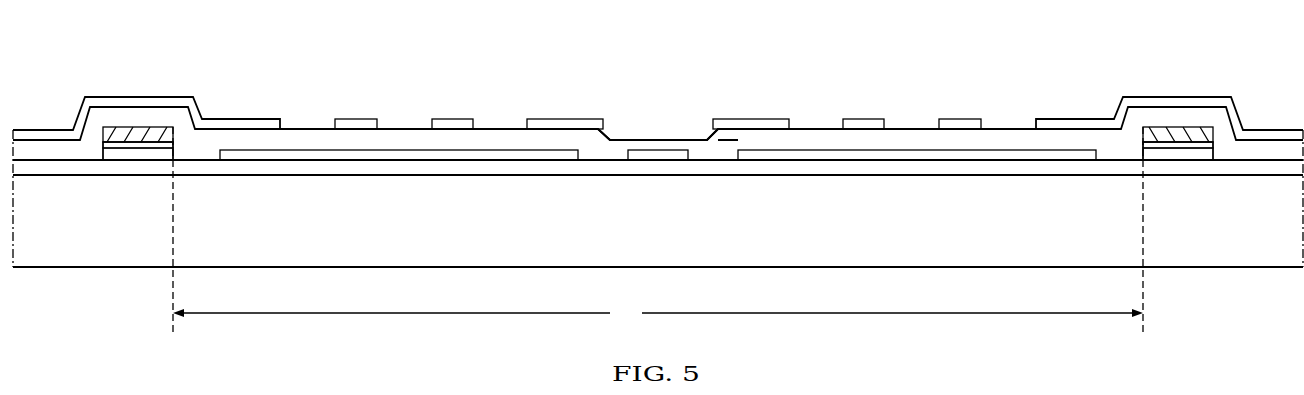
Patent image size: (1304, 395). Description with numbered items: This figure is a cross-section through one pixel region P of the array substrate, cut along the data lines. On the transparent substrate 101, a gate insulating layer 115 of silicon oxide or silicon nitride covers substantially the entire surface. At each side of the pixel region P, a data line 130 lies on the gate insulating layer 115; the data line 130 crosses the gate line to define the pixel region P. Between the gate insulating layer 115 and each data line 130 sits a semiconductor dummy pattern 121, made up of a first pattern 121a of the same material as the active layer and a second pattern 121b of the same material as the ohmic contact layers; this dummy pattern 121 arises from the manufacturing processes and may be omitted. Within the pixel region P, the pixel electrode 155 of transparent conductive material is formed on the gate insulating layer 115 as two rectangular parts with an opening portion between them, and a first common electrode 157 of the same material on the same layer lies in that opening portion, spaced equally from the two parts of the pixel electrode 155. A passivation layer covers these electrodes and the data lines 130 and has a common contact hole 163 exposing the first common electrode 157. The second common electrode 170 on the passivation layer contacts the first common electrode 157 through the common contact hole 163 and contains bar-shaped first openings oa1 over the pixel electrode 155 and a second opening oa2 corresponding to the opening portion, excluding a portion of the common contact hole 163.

The transparent substrate 101 is at (1290, 258).
The gate insulating layer 115 is at (820, 166).
The semiconductor dummy pattern 121 is at (153, 223).
The first pattern 121a is at (153, 154).
The second pattern 121b is at (122, 149).
The data line 130 is at (143, 128).
The pixel electrode 155 is at (367, 161).
The first common electrode 157 is at (662, 161).
The common contact hole 163 is at (661, 139).
The second common electrode 170 is at (232, 124).
The first openings oa1 is at (304, 127).
The second opening oa2 is at (500, 127).
The pixel region P is at (658, 313).